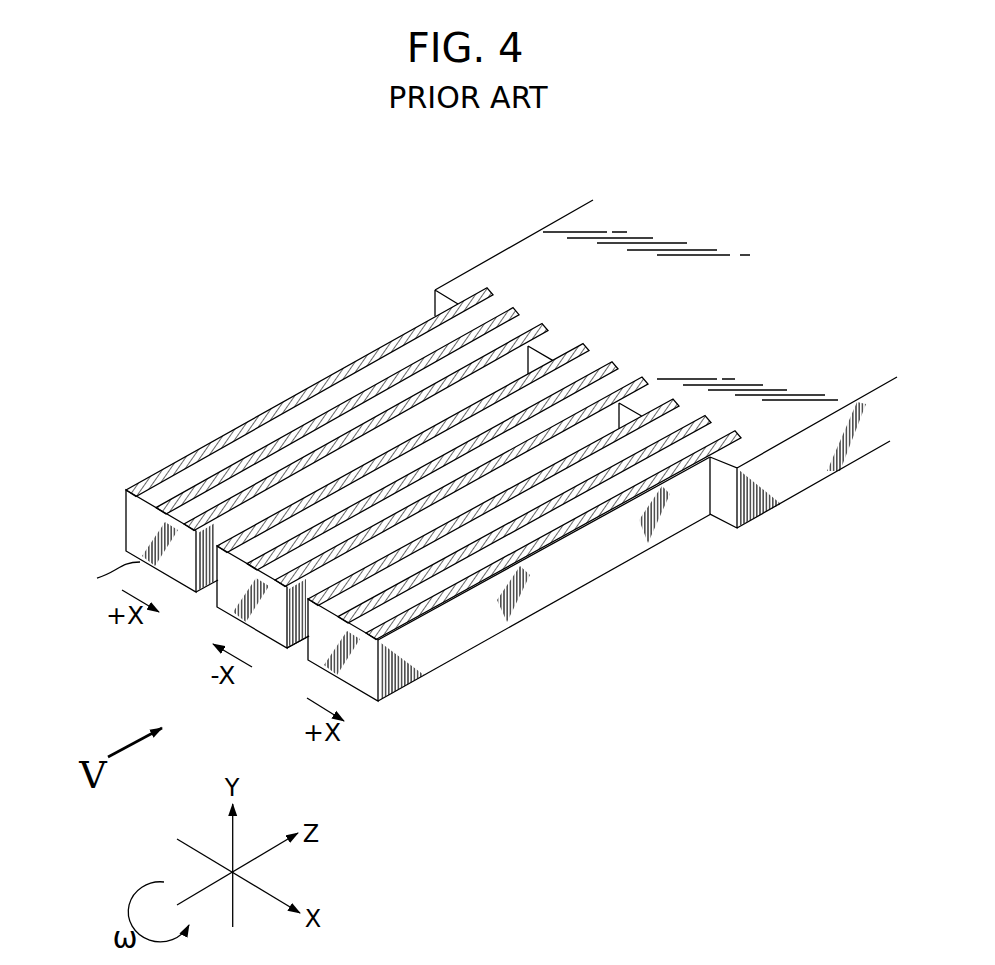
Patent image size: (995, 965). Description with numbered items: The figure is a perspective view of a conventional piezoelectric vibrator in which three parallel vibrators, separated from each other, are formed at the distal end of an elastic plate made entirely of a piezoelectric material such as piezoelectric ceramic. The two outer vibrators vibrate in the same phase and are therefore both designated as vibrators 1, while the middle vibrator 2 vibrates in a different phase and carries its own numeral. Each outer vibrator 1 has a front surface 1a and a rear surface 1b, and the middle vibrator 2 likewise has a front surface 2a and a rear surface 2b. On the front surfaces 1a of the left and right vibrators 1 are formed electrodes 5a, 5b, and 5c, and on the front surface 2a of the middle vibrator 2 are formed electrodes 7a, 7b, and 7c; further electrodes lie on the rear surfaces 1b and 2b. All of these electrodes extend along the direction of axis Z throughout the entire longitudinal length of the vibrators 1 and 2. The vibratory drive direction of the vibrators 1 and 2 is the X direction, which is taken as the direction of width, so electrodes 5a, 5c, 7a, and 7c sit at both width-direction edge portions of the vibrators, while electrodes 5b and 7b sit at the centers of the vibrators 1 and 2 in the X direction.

The vibrator 1 is at (121, 537).
The front surface 1a is at (172, 477).
The rear surface 1b is at (372, 706).
The middle vibrator 2 is at (219, 612).
The front surface 2a is at (297, 520).
The rear surface 2b is at (268, 641).
The electrode 5a is at (277, 410).
The electrode 5b is at (348, 400).
The electrode 5c is at (425, 391).
The electrode 7a is at (578, 343).
The electrode 7b is at (611, 362).
The electrode 7c is at (642, 381).